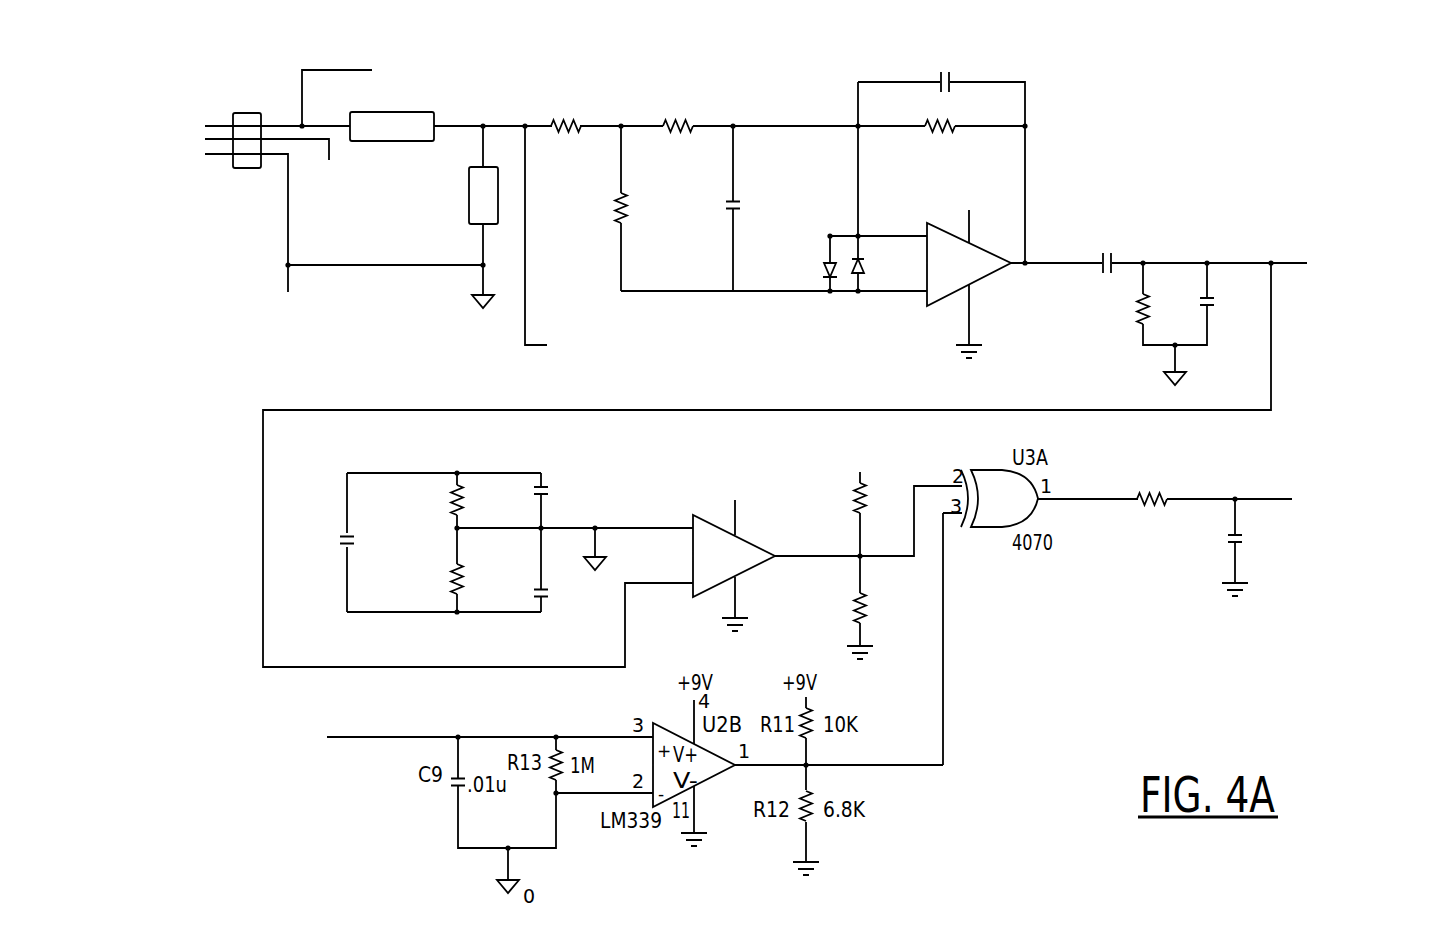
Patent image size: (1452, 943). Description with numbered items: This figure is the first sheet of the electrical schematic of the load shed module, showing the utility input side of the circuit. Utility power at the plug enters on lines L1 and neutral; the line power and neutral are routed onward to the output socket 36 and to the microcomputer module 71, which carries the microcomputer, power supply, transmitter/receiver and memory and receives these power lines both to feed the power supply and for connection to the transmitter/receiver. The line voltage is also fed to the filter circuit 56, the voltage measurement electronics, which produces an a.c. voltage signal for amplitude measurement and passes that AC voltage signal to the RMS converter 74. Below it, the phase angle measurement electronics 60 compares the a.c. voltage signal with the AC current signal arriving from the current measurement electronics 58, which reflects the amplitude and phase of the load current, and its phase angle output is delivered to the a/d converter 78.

The filter circuit 56 is at (773, 360).
The phase angle measurement electronics 60 is at (692, 643).
The output socket 36 is at (442, 93).
The microcomputer module 71 is at (672, 243).
The RMS converter 74 is at (1356, 279).
The a/d converter 78 is at (1243, 527).
The current measurement electronics 58 is at (419, 770).